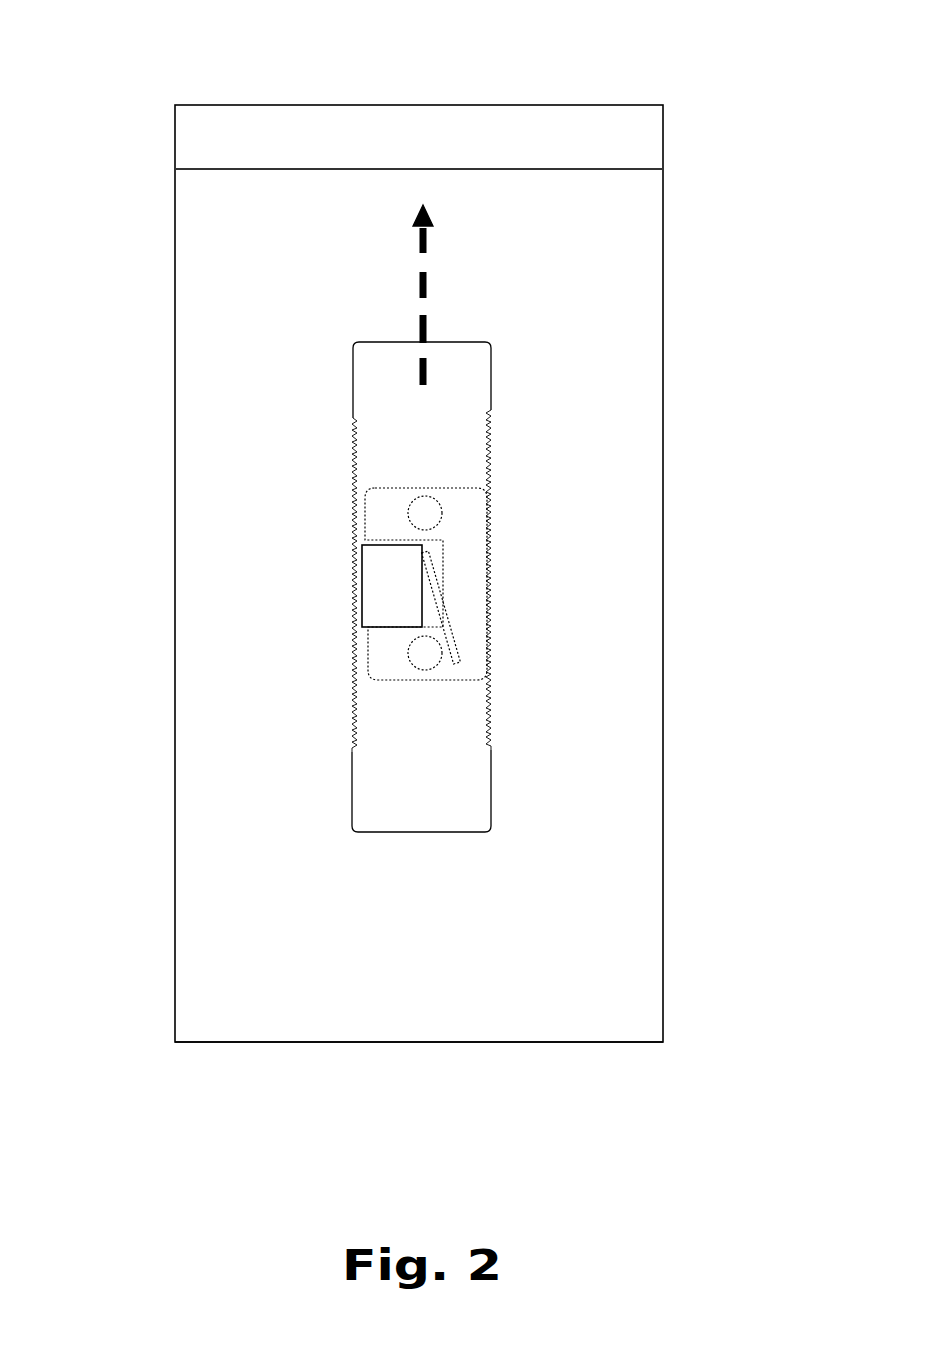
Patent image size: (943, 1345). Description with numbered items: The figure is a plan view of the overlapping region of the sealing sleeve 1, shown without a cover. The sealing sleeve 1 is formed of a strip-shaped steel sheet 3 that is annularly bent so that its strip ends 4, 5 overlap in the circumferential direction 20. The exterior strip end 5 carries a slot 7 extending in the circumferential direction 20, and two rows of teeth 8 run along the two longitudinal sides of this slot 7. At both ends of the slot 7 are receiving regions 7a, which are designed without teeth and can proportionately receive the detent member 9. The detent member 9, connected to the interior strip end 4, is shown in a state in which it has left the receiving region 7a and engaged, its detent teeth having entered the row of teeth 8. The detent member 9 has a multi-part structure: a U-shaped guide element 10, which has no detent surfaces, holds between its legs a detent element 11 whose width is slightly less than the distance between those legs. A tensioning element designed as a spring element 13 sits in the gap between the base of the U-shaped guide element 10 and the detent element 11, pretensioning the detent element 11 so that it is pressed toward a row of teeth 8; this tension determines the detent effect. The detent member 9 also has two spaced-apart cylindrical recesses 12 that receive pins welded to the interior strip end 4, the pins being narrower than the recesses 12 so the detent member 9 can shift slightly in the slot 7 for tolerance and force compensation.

The sealing sleeve 1 is at (128, 90).
The steel sheet 3 is at (617, 838).
The interior strip end 4 is at (588, 152).
The exterior strip end 5 is at (595, 1003).
The slot 7 is at (593, 243).
The receiving region 7a is at (478, 375).
The row of teeth 8 is at (353, 448).
The detent member 9 is at (376, 694).
The U-shaped guide element 10 is at (404, 663).
The detent element 11 is at (387, 590).
The cylindrical recess 12 is at (410, 652).
The spring element 13 is at (445, 612).
The circumferential direction 20 is at (423, 285).